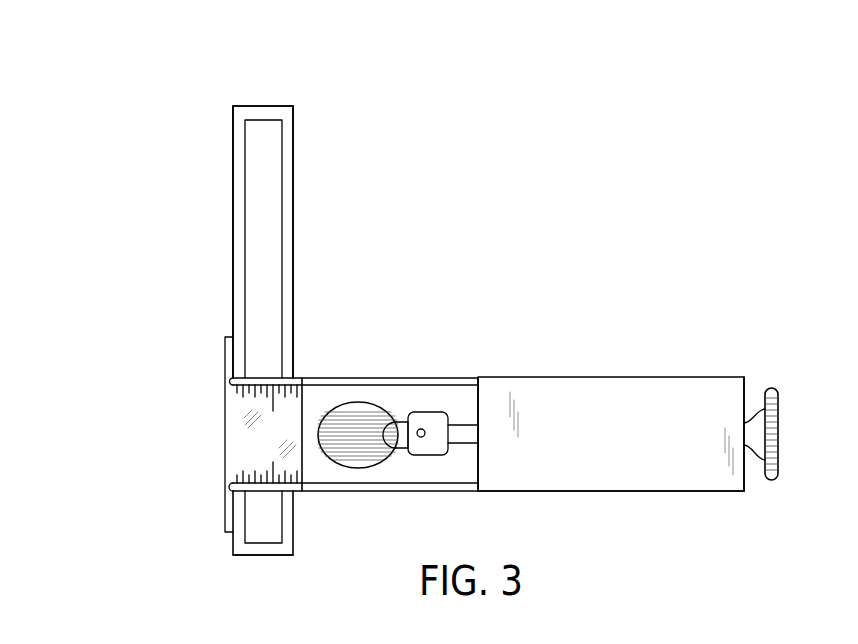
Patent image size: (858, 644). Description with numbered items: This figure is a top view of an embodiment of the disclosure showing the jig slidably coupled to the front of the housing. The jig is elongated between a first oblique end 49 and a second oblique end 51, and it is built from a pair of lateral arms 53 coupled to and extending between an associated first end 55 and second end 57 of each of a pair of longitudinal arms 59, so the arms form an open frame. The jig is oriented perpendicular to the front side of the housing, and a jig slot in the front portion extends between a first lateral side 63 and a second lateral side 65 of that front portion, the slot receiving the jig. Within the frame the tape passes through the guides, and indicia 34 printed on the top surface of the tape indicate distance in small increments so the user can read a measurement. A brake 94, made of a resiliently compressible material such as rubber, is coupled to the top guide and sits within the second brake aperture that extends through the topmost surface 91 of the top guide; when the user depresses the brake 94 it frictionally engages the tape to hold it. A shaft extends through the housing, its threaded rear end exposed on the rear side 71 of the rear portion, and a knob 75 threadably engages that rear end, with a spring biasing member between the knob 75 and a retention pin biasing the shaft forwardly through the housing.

The first oblique end 49 is at (210, 223).
The second oblique end 51 is at (251, 577).
The lateral arms 53 is at (293, 210).
The first end 55 is at (233, 106).
The second end 57 is at (293, 106).
The longitudinal arms 59 is at (245, 105).
The indicia 34 is at (272, 462).
The brake 94 is at (363, 428).
The topmost surface 91 is at (423, 398).
The second lateral side 65 is at (577, 378).
The first lateral side 63 is at (622, 491).
The rear side 71 is at (745, 388).
The knob 75 is at (778, 412).